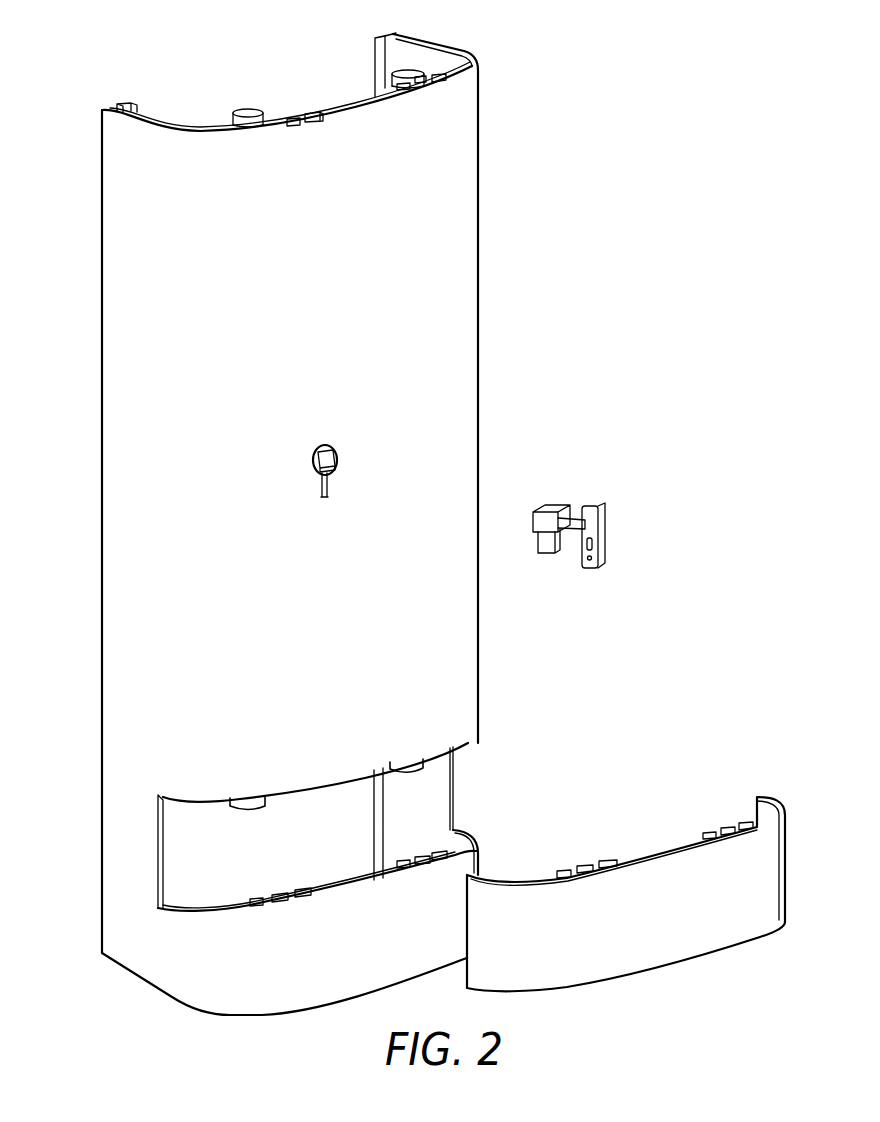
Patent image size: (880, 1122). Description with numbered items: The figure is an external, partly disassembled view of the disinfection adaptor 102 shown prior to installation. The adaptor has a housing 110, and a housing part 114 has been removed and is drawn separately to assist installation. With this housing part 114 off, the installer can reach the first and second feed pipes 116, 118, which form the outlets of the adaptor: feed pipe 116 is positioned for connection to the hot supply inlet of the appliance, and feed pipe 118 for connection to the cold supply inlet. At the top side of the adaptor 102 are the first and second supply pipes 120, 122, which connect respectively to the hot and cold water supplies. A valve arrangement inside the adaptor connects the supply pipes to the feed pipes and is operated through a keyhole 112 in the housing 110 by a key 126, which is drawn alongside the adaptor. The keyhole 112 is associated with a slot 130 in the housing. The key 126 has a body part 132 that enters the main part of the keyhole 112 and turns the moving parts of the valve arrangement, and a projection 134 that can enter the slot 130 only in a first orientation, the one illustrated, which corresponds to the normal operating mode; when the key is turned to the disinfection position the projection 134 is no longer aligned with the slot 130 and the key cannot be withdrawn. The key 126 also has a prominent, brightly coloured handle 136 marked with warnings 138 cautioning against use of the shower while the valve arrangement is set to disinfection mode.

The disinfection adaptor 102 is at (443, 508).
The housing 110 is at (479, 661).
The keyhole 112 is at (338, 452).
The housing part 114 is at (688, 961).
The first feed pipe 116 is at (248, 813).
The second feed pipe 118 is at (415, 775).
The first supply pipe 120 is at (247, 108).
The second supply pipe 122 is at (408, 69).
The key 126 is at (585, 524).
The slot 130 is at (330, 485).
The body part 132 is at (553, 506).
The projection 134 is at (545, 547).
The handle 136 is at (606, 538).
The warnings 138 is at (594, 548).